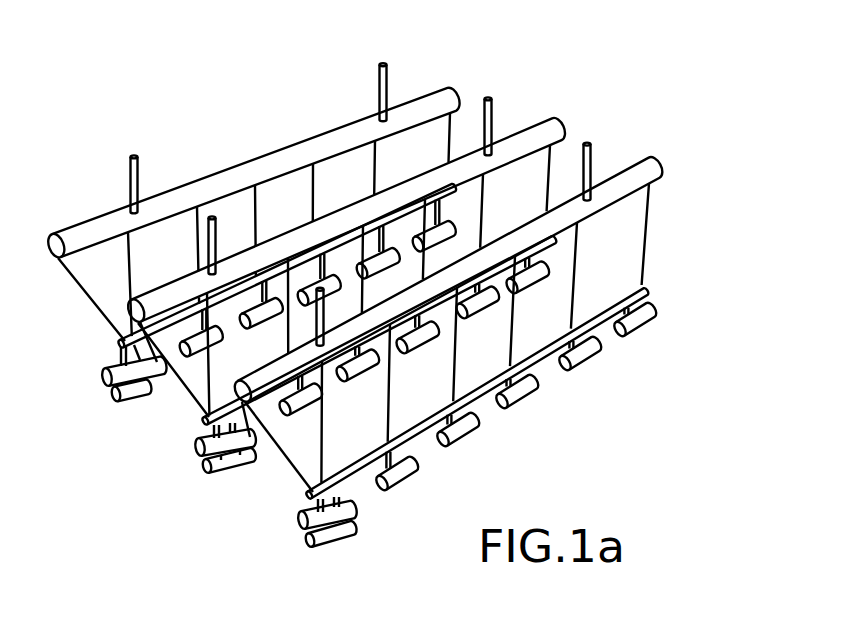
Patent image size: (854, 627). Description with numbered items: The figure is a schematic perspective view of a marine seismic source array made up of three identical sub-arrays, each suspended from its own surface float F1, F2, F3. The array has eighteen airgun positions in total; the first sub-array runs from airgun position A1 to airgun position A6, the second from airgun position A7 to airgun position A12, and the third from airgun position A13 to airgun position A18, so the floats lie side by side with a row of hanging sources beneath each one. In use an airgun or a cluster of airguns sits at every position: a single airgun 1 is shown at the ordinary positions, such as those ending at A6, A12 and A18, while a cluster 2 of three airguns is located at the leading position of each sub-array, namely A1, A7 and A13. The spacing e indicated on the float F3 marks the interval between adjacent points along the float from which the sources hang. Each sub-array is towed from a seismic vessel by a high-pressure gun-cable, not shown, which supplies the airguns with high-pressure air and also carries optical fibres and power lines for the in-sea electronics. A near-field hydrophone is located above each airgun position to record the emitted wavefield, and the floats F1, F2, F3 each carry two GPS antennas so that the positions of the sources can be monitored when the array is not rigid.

The surface float F1 is at (475, 354).
The surface float F2 is at (379, 309).
The surface float F3 is at (288, 250).
The spacing between pins e is at (380, 90).
The airgun position A1 is at (346, 535).
The airgun position A6 is at (640, 328).
The airgun position A7 is at (204, 468).
The airgun position A12 is at (546, 280).
The airgun position A13 is at (112, 402).
The airgun position A18 is at (455, 228).
The airgun 1 is at (458, 440).
The cluster 2 is at (303, 548).